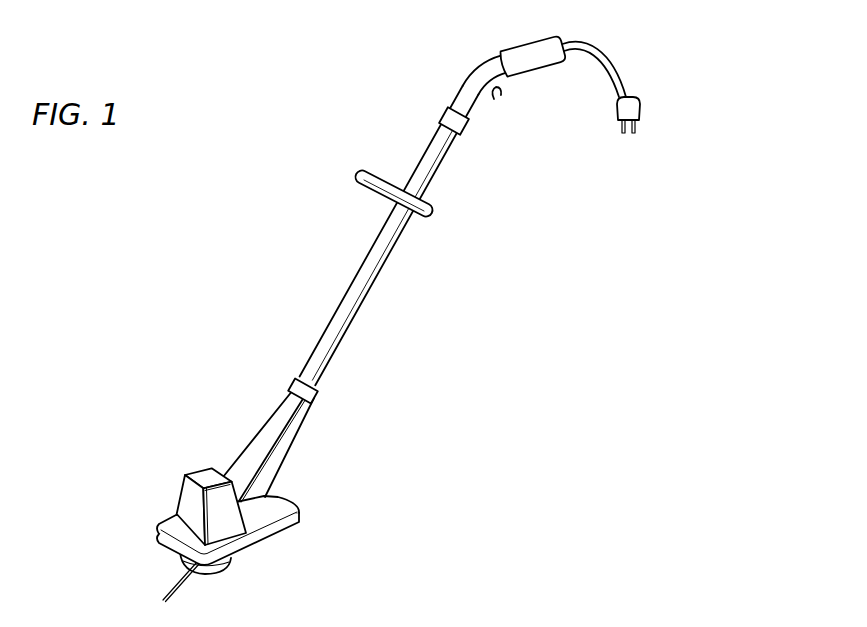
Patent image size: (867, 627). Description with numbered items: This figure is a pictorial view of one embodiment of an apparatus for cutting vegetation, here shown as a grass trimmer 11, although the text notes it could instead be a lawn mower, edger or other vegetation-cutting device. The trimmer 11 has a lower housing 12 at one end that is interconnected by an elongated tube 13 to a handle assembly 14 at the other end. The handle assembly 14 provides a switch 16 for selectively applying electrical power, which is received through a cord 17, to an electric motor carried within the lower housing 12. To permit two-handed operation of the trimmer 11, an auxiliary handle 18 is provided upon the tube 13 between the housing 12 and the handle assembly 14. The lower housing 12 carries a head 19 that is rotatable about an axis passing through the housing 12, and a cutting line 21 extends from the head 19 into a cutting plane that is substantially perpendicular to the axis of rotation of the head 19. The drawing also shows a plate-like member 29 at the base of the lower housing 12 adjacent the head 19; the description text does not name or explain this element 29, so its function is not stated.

The grass trimmer 11 is at (314, 251).
The lower housing 12 is at (272, 413).
The tube 13 is at (392, 260).
The handle assembly 14 is at (510, 50).
The switch 16 is at (500, 95).
The cord 17 is at (620, 65).
The auxiliary handle 18 is at (365, 168).
The head 19 is at (227, 567).
The cutting line 21 is at (168, 587).
The base plate 29 is at (283, 513).